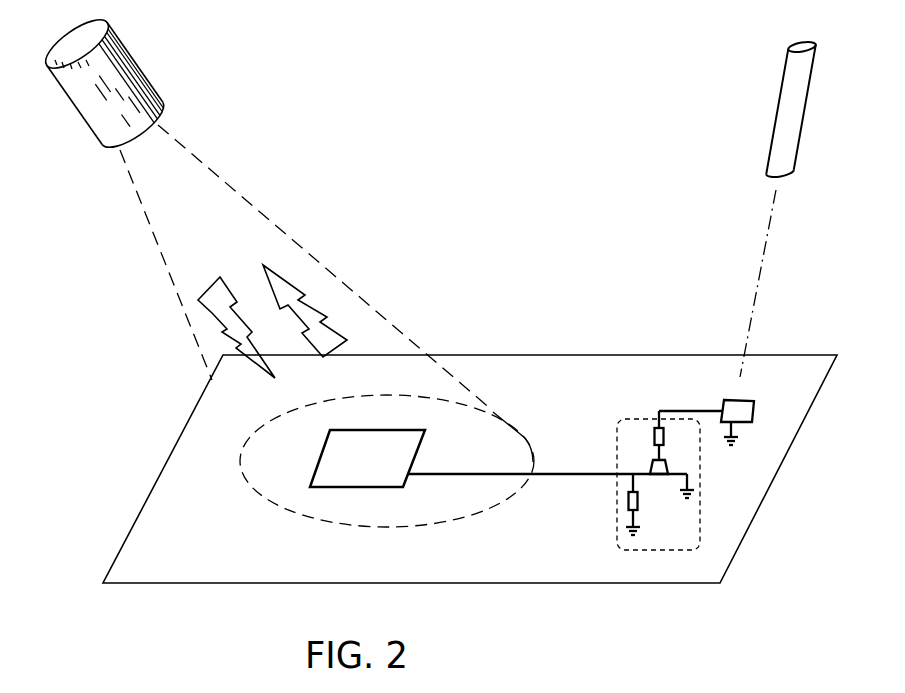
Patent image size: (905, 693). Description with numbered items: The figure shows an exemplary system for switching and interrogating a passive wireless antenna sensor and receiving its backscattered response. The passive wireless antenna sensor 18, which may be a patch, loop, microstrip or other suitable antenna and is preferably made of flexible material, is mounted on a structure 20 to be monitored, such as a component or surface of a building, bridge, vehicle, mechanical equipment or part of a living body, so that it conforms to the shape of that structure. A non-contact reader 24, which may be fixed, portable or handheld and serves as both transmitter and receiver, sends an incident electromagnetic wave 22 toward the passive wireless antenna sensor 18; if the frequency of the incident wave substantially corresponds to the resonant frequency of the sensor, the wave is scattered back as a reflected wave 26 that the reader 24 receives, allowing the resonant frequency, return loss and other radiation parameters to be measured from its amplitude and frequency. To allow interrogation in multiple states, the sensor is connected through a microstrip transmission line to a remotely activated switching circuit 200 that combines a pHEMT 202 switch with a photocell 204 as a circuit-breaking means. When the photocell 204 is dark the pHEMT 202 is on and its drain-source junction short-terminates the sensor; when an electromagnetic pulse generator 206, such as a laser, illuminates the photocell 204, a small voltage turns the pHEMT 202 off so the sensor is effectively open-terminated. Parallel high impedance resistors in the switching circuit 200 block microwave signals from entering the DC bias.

The passive wireless antenna sensor 18 is at (382, 458).
The structure 20 is at (505, 395).
The incident electromagnetic wave 22 is at (222, 328).
The non-contact reader 24 is at (117, 67).
The reflected wave 26 is at (305, 302).
The switching circuit 200 is at (690, 377).
The pHEMT 202 is at (645, 419).
The photocell 204 is at (747, 400).
The electromagnetic pulse generator 206 is at (765, 113).